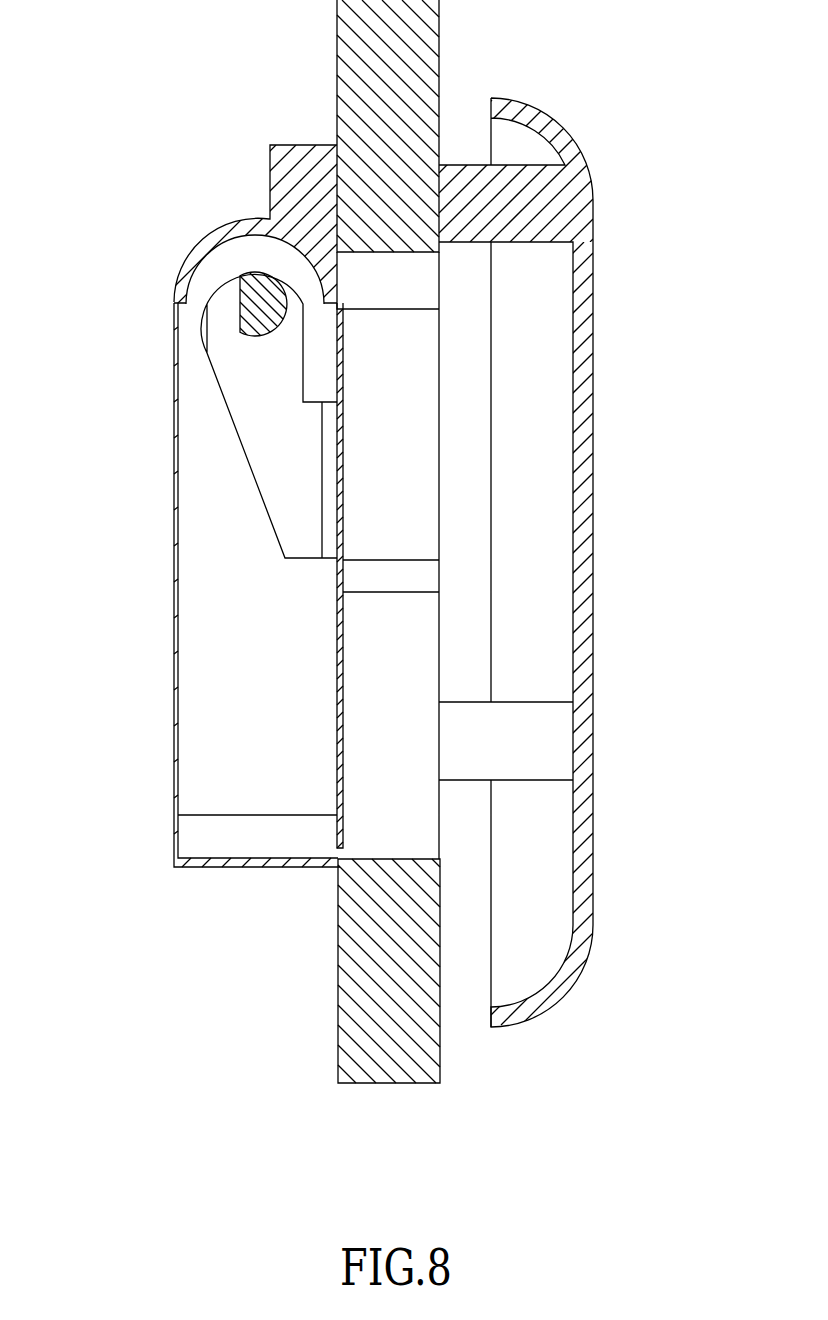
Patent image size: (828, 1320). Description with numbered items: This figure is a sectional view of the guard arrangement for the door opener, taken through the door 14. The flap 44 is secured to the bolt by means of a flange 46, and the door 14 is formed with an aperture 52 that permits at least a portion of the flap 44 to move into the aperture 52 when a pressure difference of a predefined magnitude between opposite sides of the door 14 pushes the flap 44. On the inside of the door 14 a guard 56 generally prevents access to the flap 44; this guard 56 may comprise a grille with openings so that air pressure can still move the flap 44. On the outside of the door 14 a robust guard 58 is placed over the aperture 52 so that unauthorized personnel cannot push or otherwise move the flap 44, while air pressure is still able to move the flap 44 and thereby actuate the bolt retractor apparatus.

The door 14 is at (382, 1015).
The flap 44 is at (337, 663).
The flange 46 is at (268, 432).
The aperture 52 is at (390, 750).
The guard 56 is at (175, 658).
The robust guard 58 is at (597, 572).